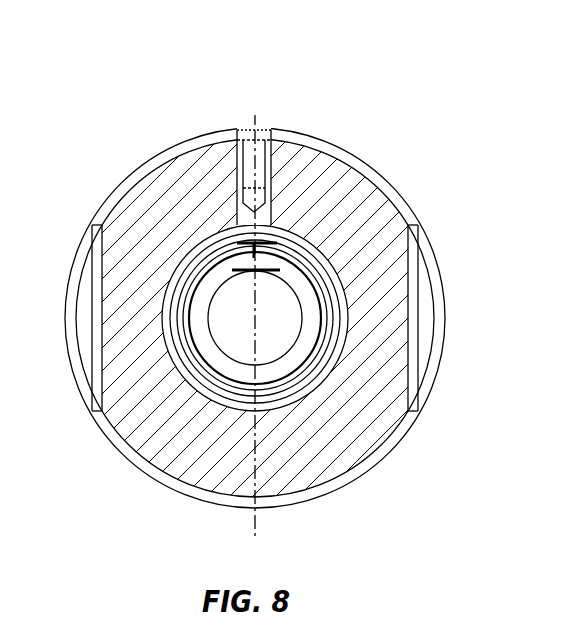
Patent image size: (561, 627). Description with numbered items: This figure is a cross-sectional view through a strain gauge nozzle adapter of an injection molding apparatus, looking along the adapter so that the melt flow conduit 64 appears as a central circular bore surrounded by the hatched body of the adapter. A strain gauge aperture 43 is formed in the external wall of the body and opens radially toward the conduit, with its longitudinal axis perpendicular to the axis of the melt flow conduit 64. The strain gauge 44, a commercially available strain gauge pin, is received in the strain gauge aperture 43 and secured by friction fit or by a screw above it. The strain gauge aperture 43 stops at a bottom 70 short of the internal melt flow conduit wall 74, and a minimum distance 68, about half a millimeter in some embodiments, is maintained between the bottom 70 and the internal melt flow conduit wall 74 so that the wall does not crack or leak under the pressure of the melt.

The strain gauge aperture 43 is at (272, 210).
The strain gauge 44 is at (248, 152).
The melt flow conduit 64 is at (268, 311).
The minimum distance 68 is at (254, 256).
The bottom of the strain gauge aperture 70 is at (255, 243).
The internal melt flow conduit wall 74 is at (230, 278).